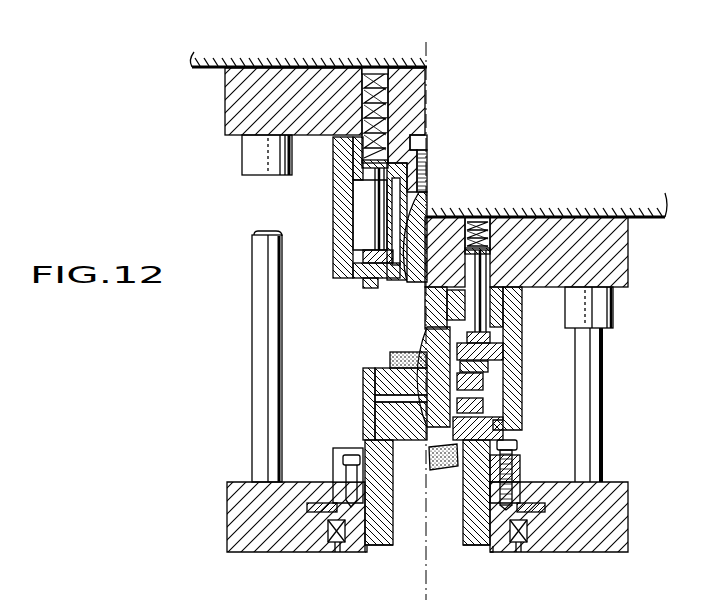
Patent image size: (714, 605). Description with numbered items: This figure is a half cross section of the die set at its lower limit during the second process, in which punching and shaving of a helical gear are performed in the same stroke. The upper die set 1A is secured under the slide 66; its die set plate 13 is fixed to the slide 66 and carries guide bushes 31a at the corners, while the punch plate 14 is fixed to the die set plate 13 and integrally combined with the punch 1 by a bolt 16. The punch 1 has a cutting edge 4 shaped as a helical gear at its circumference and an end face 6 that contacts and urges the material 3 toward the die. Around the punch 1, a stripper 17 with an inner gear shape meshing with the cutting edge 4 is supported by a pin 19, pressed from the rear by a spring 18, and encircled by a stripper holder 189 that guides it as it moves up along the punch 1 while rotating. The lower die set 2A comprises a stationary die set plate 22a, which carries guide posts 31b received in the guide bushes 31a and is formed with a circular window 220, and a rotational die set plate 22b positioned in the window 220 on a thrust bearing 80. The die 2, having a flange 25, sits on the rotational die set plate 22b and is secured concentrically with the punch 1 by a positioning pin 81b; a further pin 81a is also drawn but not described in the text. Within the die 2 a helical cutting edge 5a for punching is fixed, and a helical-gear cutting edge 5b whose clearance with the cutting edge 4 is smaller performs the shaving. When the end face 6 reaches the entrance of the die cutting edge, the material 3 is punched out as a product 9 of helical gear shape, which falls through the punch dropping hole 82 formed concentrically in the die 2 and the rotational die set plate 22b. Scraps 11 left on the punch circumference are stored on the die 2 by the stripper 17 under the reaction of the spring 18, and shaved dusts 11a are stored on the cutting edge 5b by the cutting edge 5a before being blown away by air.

The die set plate 13 is at (268, 100).
The spring 18 is at (372, 70).
The slide 66 is at (212, 78).
The punch plate 14 is at (397, 152).
The bolt 16 is at (428, 172).
The upper die set 1A is at (236, 157).
The guide bushes 31a is at (257, 170).
The pin 19 is at (340, 201).
The stripper holder 189 is at (345, 229).
The cutting edge 4 is at (430, 214).
The stripper 17 is at (364, 277).
The punch 1 is at (404, 283).
The end face of the punch 6 is at (421, 287).
The guide posts 31b is at (252, 323).
The material 3 is at (430, 348).
The cutting edge for punching 5a is at (398, 358).
The die 2 is at (363, 380).
The cutting edge for shaving 5b is at (372, 404).
The lower die set 2A is at (243, 462).
The positioning pin 81b is at (350, 462).
The scraps 11 is at (503, 369).
The shaved dusts 11a is at (503, 393).
The flange 25 is at (520, 462).
The bolt 81a is at (520, 478).
The stationary die set plate 22a is at (240, 525).
The window 220 is at (328, 512).
The thrust bearing 80 is at (340, 545).
The rotational die set plate 22b is at (385, 450).
The punch dropping hole 82 is at (440, 472).
The product 9 is at (472, 468).